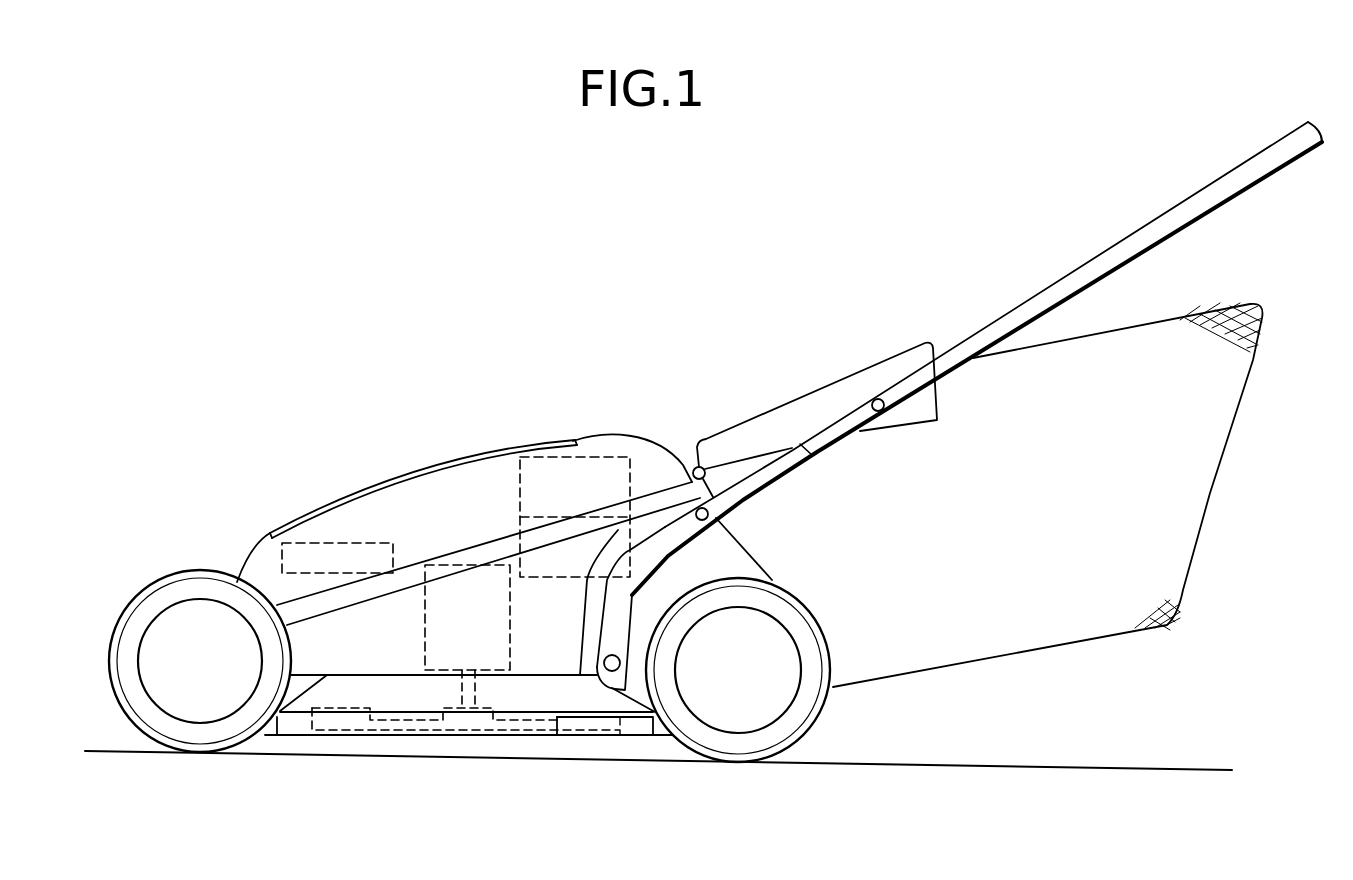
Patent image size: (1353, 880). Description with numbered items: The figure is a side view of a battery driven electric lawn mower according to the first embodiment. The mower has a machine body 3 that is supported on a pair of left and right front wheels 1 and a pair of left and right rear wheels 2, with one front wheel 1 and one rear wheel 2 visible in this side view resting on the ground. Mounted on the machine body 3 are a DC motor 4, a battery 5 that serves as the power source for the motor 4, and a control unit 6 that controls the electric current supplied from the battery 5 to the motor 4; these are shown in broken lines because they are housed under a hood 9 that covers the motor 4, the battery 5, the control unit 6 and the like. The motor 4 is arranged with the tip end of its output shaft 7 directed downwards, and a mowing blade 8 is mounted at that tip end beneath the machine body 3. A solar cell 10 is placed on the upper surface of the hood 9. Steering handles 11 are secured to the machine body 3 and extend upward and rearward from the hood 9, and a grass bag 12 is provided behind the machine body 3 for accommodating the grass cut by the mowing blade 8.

The front wheel 1 is at (212, 736).
The rear wheel 2 is at (757, 738).
The machine body 3 is at (350, 684).
The DC motor 4 is at (481, 583).
The battery 5 is at (604, 467).
The control unit 6 is at (272, 549).
The output shaft 7 is at (490, 690).
The mowing blade 8 is at (368, 720).
The hood 9 is at (650, 433).
The solar cell 10 is at (382, 488).
The steering handle 11 is at (1042, 292).
The grass bag 12 is at (1188, 483).